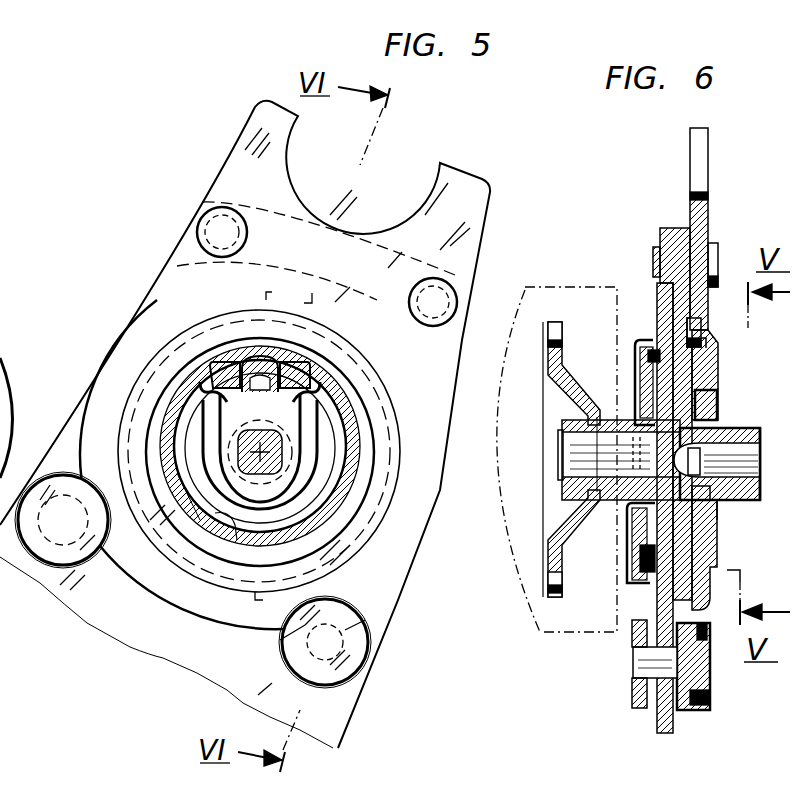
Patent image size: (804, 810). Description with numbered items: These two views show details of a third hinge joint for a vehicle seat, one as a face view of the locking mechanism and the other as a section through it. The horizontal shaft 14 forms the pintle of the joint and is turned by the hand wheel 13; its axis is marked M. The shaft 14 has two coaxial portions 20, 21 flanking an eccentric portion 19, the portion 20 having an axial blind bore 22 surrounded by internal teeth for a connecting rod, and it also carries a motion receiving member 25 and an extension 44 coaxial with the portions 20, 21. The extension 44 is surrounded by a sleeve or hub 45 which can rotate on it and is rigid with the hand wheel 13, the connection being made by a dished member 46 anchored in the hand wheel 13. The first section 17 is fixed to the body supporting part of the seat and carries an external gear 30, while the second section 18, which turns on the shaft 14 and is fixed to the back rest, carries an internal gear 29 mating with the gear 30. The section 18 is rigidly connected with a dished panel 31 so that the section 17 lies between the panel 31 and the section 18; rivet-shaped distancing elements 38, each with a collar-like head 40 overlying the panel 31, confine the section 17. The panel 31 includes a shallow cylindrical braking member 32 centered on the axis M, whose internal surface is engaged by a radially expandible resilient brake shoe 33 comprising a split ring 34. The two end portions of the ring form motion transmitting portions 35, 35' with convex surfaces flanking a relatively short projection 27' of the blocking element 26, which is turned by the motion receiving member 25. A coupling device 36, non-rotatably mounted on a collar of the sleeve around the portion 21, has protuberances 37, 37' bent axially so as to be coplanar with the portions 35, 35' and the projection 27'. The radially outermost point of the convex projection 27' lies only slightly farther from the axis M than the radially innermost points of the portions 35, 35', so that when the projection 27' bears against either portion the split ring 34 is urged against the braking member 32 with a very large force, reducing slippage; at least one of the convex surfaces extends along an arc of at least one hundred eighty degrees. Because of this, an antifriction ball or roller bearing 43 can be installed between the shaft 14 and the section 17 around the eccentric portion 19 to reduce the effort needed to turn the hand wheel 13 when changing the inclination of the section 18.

In FIG. 6, the hand wheel 13 is at (533, 272).
In FIG. 6, the shaft 14 is at (750, 498).
In FIG. 5, the first section 17 is at (255, 670).
In FIG. 6, the first section 17 is at (665, 722).
In FIG. 5, the second section 18 is at (443, 236).
In FIG. 6, the second section 18 is at (700, 182).
In FIG. 6, the eccentric portion 19 is at (714, 502).
In FIG. 6, the shaft portion 20 is at (722, 430).
In FIG. 6, the shaft portion 21 is at (640, 390).
In FIG. 6, the axial blind bore 22 is at (730, 480).
In FIG. 5, the motion receiving member 25 is at (190, 395).
In FIG. 6, the motion receiving member 25 is at (625, 497).
In FIG. 5, the blocking element 26 is at (300, 470).
In FIG. 5, the projection 27' is at (301, 345).
In FIG. 6, the projection 27' is at (636, 326).
In FIG. 6, the internal gear 29 is at (702, 333).
In FIG. 6, the external gear 30 is at (748, 352).
In FIG. 6, the dished panel 31 is at (667, 233).
In FIG. 5, the braking member 32 is at (143, 423).
In FIG. 5, the brake shoe 33 is at (215, 513).
In FIG. 5, the split ring 34 is at (177, 473).
In FIG. 5, the motion transmitting portion 35 is at (333, 354).
In FIG. 5, the motion transmitting portion 35' is at (170, 303).
In FIG. 5, the coupling device 36 is at (150, 455).
In FIG. 6, the coupling device 36 is at (633, 528).
In FIG. 5, the protuberance 37 is at (206, 343).
In FIG. 5, the protuberance 37' is at (159, 322).
In FIG. 5, the distancing element 38 is at (56, 553).
In FIG. 6, the distancing element 38 is at (708, 707).
In FIG. 6, the head 40 is at (632, 695).
In FIG. 6, the antifriction bearing 43 is at (710, 412).
In FIG. 6, the extension 44 is at (610, 450).
In FIG. 6, the hub 45 is at (580, 487).
In FIG. 6, the dished member 46 is at (547, 600).
In FIG. 5, the axis M is at (360, 487).